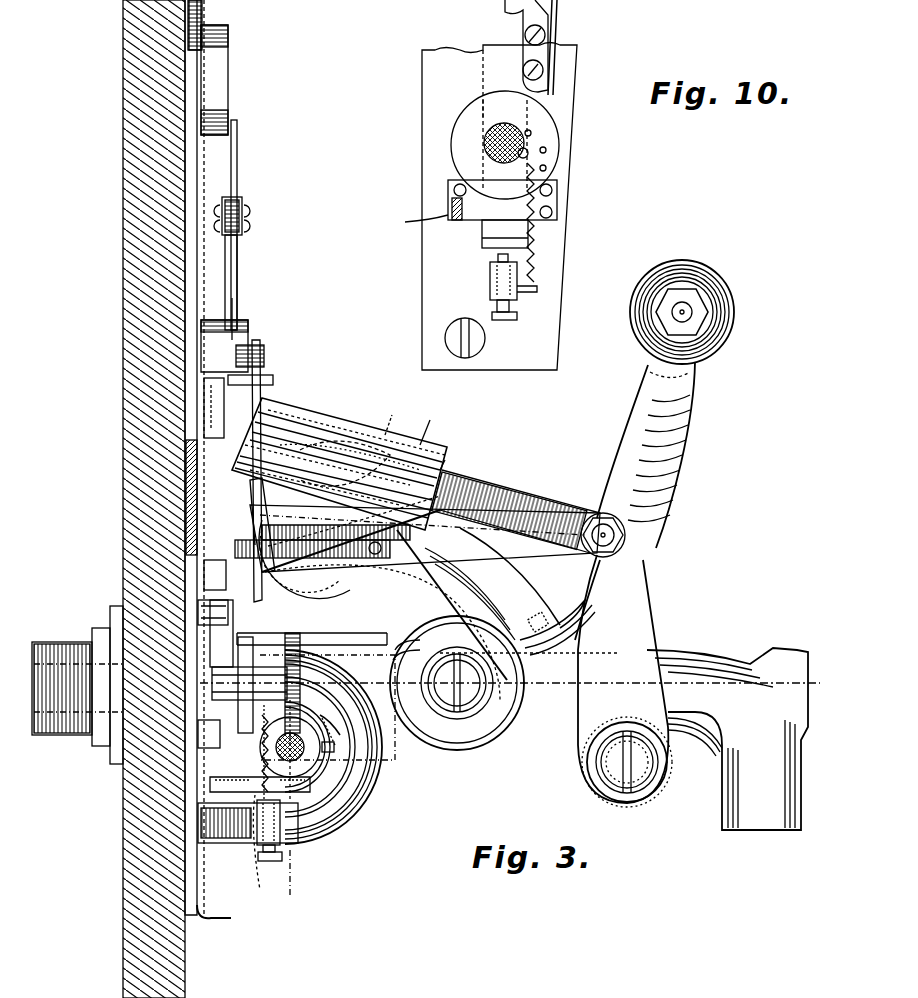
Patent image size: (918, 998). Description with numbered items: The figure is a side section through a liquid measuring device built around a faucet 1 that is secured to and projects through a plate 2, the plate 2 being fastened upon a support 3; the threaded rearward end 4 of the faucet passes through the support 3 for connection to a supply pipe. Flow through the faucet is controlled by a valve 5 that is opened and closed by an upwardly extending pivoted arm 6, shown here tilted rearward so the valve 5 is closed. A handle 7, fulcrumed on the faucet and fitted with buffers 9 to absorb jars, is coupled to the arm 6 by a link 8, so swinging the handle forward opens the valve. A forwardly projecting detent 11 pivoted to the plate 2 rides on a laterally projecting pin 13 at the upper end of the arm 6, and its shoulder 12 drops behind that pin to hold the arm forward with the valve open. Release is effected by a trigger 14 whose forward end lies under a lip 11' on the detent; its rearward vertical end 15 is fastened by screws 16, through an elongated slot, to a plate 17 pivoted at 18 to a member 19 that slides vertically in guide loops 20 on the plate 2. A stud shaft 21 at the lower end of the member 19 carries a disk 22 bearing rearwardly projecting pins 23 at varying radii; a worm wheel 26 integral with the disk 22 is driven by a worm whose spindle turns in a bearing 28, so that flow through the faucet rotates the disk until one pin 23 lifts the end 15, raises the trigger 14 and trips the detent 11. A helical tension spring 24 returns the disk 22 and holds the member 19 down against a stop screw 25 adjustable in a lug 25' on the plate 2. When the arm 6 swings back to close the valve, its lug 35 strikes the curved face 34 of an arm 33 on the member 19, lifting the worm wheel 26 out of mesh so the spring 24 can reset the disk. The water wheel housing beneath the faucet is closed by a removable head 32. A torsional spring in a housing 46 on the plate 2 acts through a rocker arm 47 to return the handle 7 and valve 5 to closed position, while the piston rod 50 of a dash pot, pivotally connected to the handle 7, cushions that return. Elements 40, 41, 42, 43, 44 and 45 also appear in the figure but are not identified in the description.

In FIG. 3, the faucet 1 is at (663, 605).
In FIG. 3, the plate 2 is at (191, 540).
In FIG. 10, the plate 2 is at (432, 92).
In FIG. 3, the support 3 is at (136, 860).
In FIG. 3, the rearward end 4 is at (60, 738).
In FIG. 3, the valve 5 is at (490, 660).
In FIG. 3, the pivoted arm 6 is at (440, 580).
In FIG. 3, the handle 7 is at (232, 296).
In FIG. 3, the link 8 is at (555, 540).
In FIG. 3, the buffers 9 is at (575, 620).
In FIG. 3, the detent 11 is at (291, 551).
In FIG. 3, the lip 11' is at (469, 454).
In FIG. 3, the shoulder 12 is at (452, 550).
In FIG. 3, the pin 13 is at (380, 553).
In FIG. 3, the trigger 14 is at (330, 545).
In FIG. 3, the rearward vertically disposed end 15 is at (229, 612).
In FIG. 10, the rearward vertically disposed end 15 is at (547, 22).
In FIG. 3, the screws 16 is at (265, 590).
In FIG. 10, the screws 16 is at (545, 62).
In FIG. 3, the plate 17 is at (215, 590).
In FIG. 3, the pivot 18 is at (160, 500).
In FIG. 3, the member 19 is at (189, 468).
In FIG. 10, the member 19 is at (490, 232).
In FIG. 3, the guide loops 20 is at (206, 392).
In FIG. 10, the guide loops 20 is at (557, 205).
In FIG. 3, the stud shaft 21 is at (330, 665).
In FIG. 10, the stud shaft 21 is at (493, 150).
In FIG. 3, the disk 22 is at (255, 666).
In FIG. 10, the disk 22 is at (533, 138).
In FIG. 3, the pins 23 is at (245, 752).
In FIG. 10, the pins 23 is at (546, 152).
In FIG. 3, the helical tension spring 24 is at (262, 885).
In FIG. 10, the helical tension spring 24 is at (534, 240).
In FIG. 3, the screw 25 is at (313, 865).
In FIG. 10, the screw 25 is at (549, 318).
In FIG. 3, the lug 25' is at (311, 831).
In FIG. 10, the lug 25' is at (553, 277).
In FIG. 3, the worm wheel 26 is at (320, 640).
In FIG. 3, the bearing 28 is at (205, 780).
In FIG. 10, the bearing 28 is at (407, 221).
In FIG. 3, the removable head 32 is at (360, 790).
In FIG. 3, the arm 33 is at (336, 385).
In FIG. 3, the curved face 34 is at (394, 413).
In FIG. 3, the extension or lug 35 is at (350, 463).
In FIG. 3, the bracket 40 is at (248, 333).
In FIG. 3, the rod 41 is at (238, 262).
In FIG. 3, the rod 42 is at (237, 165).
In FIG. 3, the knob 43 is at (216, 80).
In FIG. 3, the housing 44 is at (262, 400).
In FIG. 3, the pawl 45 is at (345, 740).
In FIG. 3, the housing 46 is at (345, 560).
In FIG. 3, the rocker arm 47 is at (432, 422).
In FIG. 3, the piston rod 50 is at (527, 498).